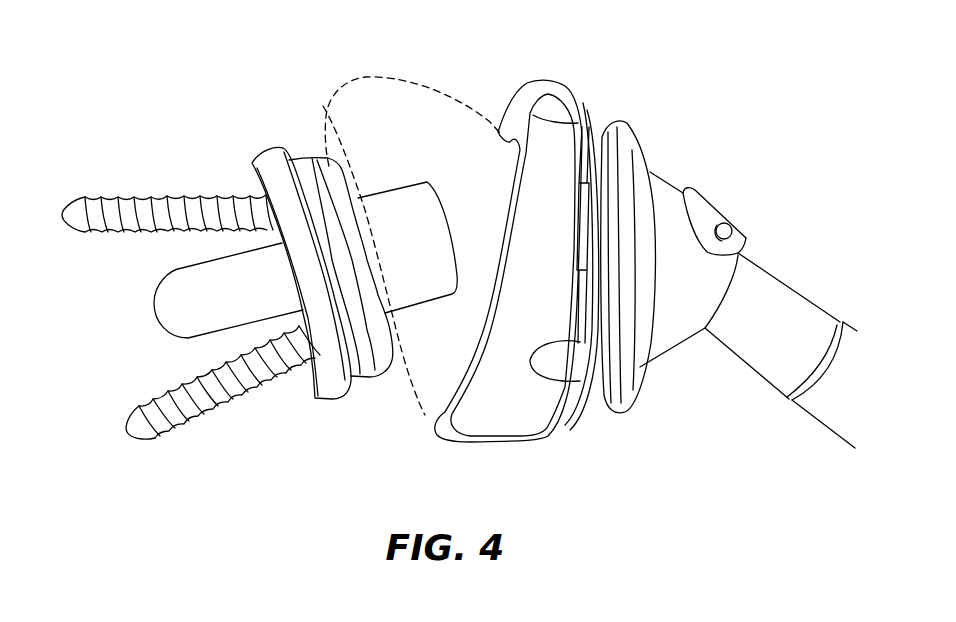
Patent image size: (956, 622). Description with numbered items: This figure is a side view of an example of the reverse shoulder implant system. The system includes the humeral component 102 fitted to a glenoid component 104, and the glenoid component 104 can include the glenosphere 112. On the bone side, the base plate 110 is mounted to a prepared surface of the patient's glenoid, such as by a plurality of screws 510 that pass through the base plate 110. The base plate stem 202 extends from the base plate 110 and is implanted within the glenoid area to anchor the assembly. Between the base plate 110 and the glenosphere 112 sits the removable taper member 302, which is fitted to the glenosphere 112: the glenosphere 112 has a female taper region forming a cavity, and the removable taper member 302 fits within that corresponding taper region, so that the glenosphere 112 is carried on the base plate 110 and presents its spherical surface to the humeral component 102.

The humeral component 102 is at (657, 175).
The glenoid component 104 is at (433, 50).
The base plate 110 is at (349, 388).
The glenosphere 112 is at (450, 100).
The base plate stem 202 is at (156, 306).
The removable taper member 302 is at (392, 188).
The screws 510 is at (118, 199).